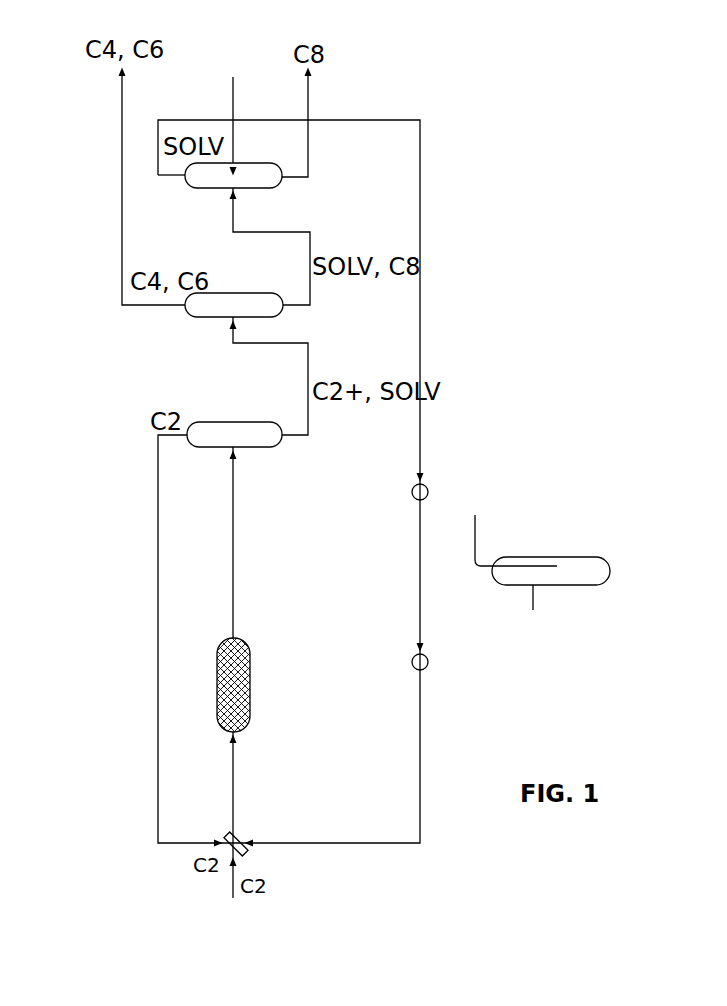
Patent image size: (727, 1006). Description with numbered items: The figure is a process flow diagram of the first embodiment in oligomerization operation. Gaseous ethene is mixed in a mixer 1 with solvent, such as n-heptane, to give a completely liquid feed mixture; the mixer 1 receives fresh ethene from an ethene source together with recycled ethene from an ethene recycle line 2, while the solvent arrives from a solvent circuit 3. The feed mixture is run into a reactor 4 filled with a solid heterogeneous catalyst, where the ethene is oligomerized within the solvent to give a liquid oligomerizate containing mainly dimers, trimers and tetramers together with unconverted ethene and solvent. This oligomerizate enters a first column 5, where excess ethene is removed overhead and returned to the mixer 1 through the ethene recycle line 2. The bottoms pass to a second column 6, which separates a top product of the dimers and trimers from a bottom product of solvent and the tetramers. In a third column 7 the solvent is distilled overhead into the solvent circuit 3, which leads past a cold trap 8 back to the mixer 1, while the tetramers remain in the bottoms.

The mixer 1 is at (238, 846).
The ethene recycle line 2 is at (158, 570).
The solvent circuit 3 is at (178, 120).
The reactor 4 is at (250, 650).
The first column 5 is at (233, 422).
The second column 6 is at (233, 293).
The third column 7 is at (235, 78).
The cold trap 8 is at (585, 567).